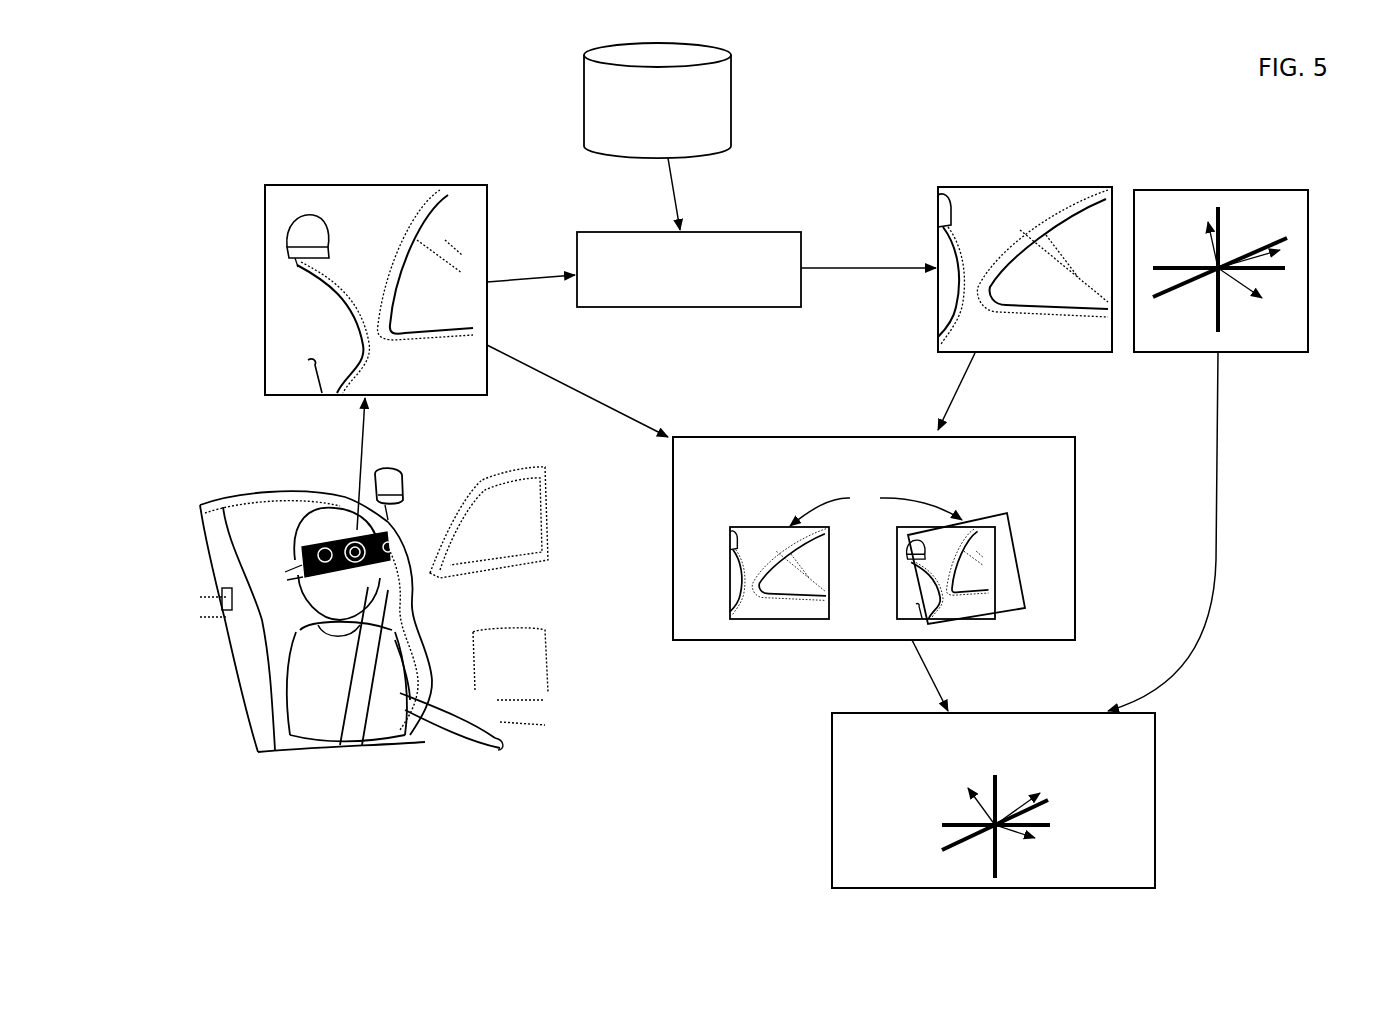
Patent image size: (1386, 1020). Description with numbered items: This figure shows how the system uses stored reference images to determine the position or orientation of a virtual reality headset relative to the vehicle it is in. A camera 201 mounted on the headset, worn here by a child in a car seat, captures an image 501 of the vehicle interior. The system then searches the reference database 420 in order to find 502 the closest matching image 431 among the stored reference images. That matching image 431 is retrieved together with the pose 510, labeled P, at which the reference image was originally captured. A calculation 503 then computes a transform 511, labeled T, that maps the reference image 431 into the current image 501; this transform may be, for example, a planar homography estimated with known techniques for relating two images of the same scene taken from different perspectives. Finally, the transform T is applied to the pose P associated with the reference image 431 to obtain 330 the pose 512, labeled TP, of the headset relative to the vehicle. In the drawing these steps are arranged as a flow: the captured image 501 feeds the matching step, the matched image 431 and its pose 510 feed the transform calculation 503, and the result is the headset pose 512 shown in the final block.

The camera 201 is at (395, 545).
The headset pose relative to vehicle 330 is at (1155, 793).
The reference database 420 is at (731, 102).
The closest matching image 431 is at (995, 187).
The image 501 is at (265, 270).
The find closest matching image 502 is at (740, 307).
The calculation 503 is at (1077, 624).
The pose 510 is at (1292, 283).
The transform 511 is at (908, 498).
The pose 512 is at (1070, 798).